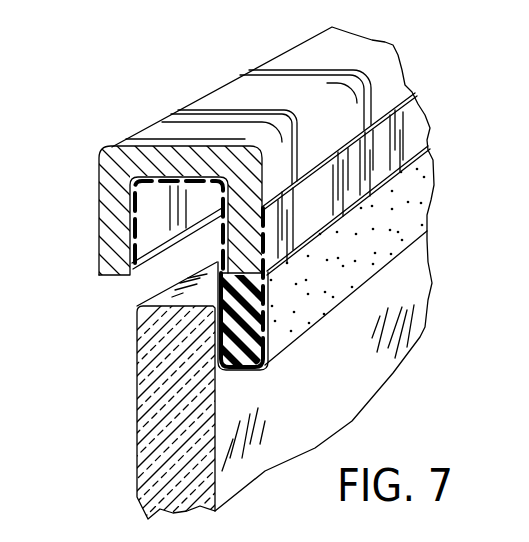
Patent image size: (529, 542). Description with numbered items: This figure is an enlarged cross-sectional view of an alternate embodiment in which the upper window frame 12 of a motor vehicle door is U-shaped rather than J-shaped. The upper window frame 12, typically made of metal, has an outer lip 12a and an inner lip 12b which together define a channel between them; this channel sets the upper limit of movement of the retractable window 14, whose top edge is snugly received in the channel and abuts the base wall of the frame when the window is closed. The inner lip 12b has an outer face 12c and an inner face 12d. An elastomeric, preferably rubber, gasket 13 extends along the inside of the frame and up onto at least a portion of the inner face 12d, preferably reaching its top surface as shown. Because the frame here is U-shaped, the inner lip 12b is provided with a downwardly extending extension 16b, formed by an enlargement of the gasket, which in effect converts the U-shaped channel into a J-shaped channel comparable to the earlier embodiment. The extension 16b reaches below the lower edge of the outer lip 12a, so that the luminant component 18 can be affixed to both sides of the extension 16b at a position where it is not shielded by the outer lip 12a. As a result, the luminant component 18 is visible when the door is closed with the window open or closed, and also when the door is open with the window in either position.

The upper window frame 12 is at (252, 99).
The outer lip 12a is at (110, 237).
The inner lip 12b is at (248, 162).
The outer face 12c is at (231, 230).
The inner face 12d is at (267, 322).
The gasket 13 is at (152, 176).
The retractable window 14 is at (340, 390).
The extension 16b is at (250, 356).
The luminant component 18 is at (388, 242).